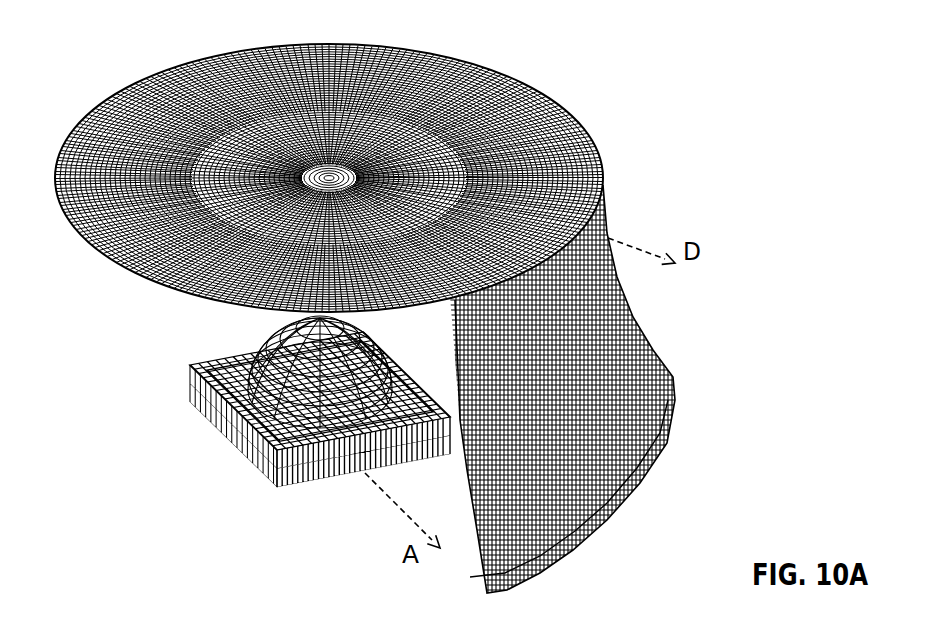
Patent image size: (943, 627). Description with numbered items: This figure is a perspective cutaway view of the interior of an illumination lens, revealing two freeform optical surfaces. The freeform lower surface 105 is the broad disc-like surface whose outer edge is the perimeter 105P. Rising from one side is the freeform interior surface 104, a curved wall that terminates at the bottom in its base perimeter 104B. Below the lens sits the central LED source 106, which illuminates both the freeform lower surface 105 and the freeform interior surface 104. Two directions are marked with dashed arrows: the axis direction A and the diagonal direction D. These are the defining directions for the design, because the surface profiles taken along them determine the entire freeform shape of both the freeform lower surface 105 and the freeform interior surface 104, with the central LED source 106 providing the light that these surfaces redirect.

The freeform interior surface 104 is at (618, 376).
The base perimeter 104B is at (640, 483).
The freeform lower surface 105 is at (550, 145).
The perimeter 105P is at (603, 180).
The central LED source 106 is at (183, 392).